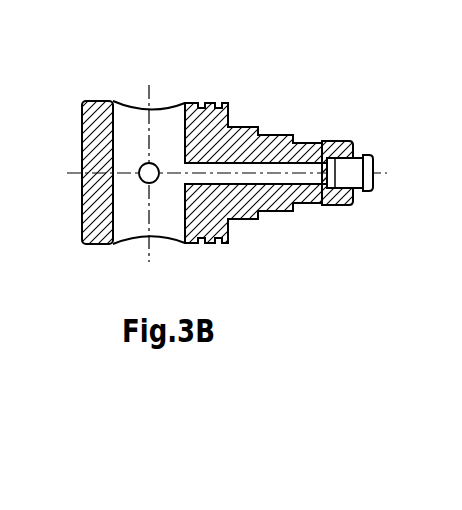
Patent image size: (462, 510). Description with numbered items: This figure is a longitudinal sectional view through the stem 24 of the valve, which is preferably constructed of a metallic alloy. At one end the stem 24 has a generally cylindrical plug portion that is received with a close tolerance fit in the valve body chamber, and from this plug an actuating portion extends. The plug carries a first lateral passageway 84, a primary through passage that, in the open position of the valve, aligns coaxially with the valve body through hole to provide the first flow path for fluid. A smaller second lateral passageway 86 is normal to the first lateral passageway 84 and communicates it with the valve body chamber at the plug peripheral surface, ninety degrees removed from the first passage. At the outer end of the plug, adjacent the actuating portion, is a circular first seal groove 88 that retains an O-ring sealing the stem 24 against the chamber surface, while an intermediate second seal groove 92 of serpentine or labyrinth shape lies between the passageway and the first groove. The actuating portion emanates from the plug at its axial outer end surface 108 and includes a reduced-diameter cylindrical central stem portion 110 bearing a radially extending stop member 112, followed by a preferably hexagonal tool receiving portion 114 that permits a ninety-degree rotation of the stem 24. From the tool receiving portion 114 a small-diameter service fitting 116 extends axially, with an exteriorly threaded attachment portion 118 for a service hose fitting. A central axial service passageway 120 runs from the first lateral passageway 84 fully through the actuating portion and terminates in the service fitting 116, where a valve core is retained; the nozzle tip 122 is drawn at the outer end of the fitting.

The stem 24 is at (137, 84).
The first lateral passageway 84 is at (123, 104).
The second lateral passageway 86 is at (146, 185).
The first seal groove 88 is at (216, 104).
The second seal groove 92 is at (197, 103).
The axial outer end surface 108 is at (231, 107).
The central stem portion 110 is at (250, 127).
The stop member 112 is at (246, 220).
The tool receiving portion 114 is at (280, 212).
The service fitting 116 is at (313, 209).
The threaded attachment portion 118 is at (343, 143).
The central axial service passageway 120 is at (295, 135).
The nozzle tip 122 is at (372, 181).